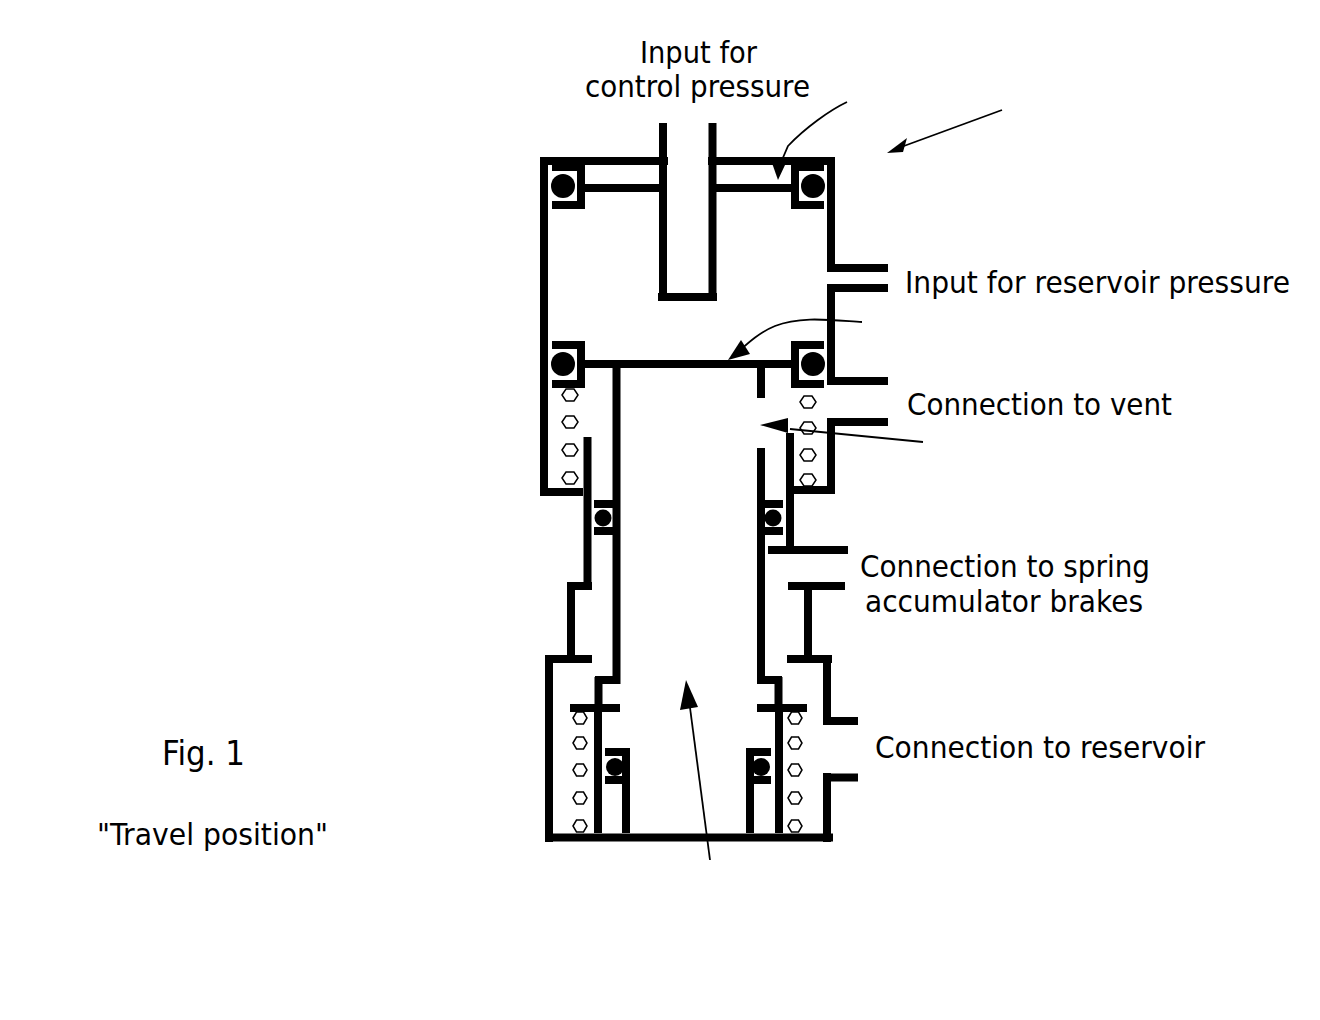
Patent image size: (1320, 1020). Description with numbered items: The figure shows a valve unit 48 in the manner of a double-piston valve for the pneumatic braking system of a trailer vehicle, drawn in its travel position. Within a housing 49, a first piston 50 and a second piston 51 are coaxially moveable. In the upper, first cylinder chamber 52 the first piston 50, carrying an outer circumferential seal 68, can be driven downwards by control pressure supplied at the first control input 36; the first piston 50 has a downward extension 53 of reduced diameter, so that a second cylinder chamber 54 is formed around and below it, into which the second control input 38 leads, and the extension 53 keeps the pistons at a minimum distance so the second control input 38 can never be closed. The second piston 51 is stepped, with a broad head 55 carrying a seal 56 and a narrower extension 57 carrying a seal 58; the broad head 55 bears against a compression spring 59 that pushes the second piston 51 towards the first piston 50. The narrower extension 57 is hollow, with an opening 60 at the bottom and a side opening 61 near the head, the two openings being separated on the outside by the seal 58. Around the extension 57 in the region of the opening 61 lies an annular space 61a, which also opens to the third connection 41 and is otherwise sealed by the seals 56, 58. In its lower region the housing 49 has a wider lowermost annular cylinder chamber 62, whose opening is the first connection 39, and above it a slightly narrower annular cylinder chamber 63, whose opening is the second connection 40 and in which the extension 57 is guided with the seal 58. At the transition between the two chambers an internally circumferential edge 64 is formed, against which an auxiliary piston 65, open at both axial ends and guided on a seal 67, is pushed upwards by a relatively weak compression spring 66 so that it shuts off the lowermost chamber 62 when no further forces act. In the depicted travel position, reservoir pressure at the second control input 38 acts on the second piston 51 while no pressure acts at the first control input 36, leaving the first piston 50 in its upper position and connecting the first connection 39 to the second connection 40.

The first control input 36 is at (713, 128).
The second control input 38 is at (870, 264).
The first connection 39 is at (852, 718).
The second connection 40 is at (838, 546).
The third connection 41 is at (877, 382).
The valve unit 48 is at (692, 493).
The housing 49 is at (540, 393).
The first piston 50 is at (799, 131).
The second piston 51 is at (817, 347).
The first cylinder chamber 52 is at (620, 172).
The extension 53 is at (682, 225).
The second cylinder chamber 54 is at (563, 297).
The broad head 55 is at (647, 360).
The seal 56 is at (545, 355).
The narrower extension 57 is at (680, 556).
The seal 58 is at (590, 520).
The compression spring 59 is at (570, 422).
The opening 60 is at (707, 796).
The opening 61 is at (862, 411).
The annular space 61a is at (580, 405).
The lowermost annular cylinder chamber 62 is at (562, 745).
The annular cylinder chamber 63 is at (597, 608).
The internally circumferential edge 64 is at (590, 665).
The auxiliary piston 65 is at (595, 722).
The compression spring 66 is at (592, 803).
The seal 67 is at (600, 767).
The circumferential seal 68 is at (833, 178).